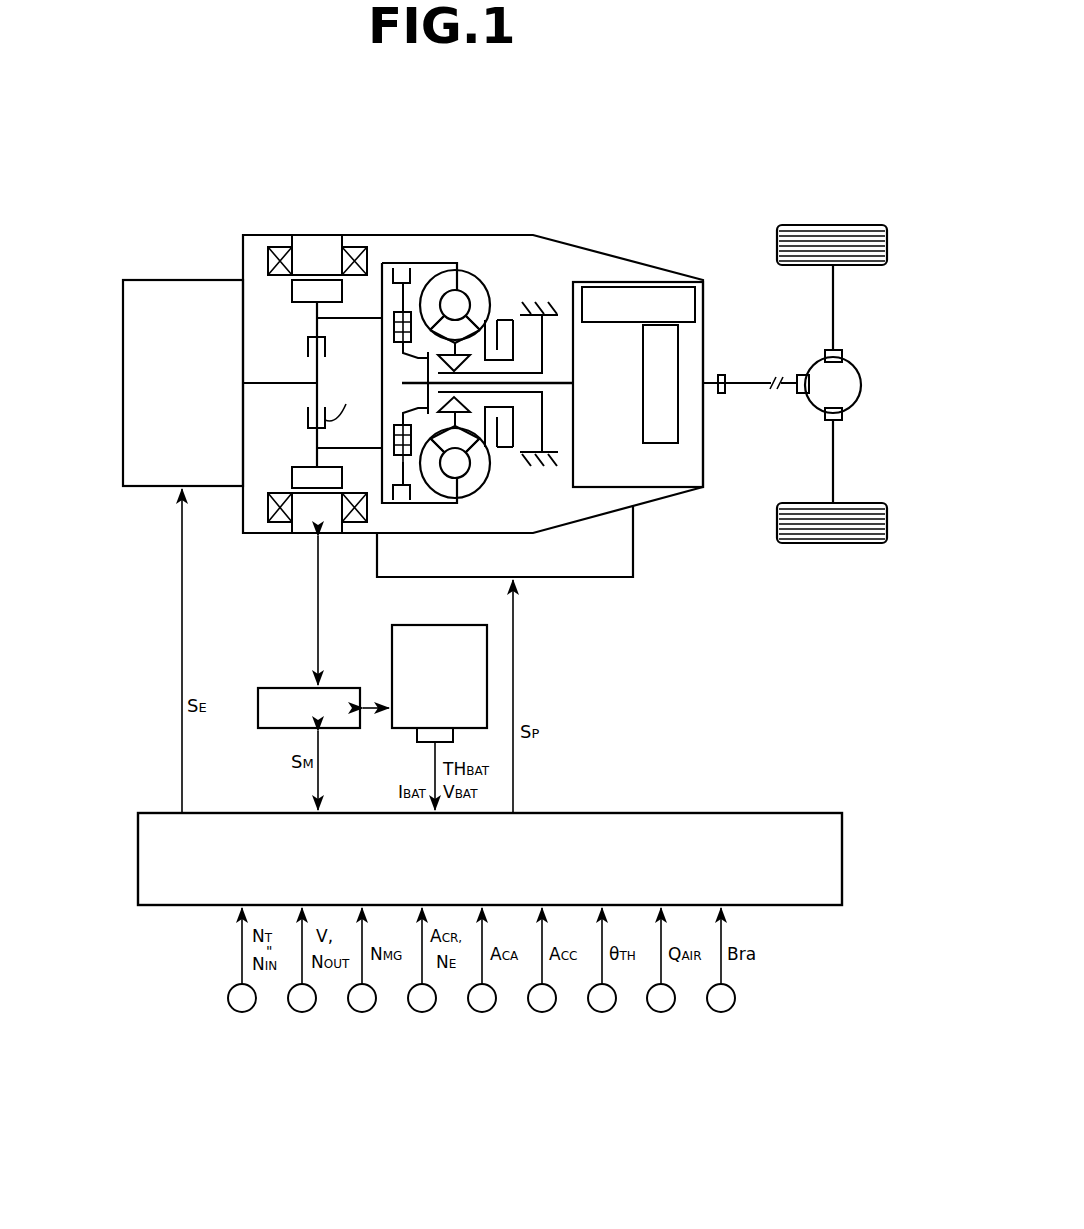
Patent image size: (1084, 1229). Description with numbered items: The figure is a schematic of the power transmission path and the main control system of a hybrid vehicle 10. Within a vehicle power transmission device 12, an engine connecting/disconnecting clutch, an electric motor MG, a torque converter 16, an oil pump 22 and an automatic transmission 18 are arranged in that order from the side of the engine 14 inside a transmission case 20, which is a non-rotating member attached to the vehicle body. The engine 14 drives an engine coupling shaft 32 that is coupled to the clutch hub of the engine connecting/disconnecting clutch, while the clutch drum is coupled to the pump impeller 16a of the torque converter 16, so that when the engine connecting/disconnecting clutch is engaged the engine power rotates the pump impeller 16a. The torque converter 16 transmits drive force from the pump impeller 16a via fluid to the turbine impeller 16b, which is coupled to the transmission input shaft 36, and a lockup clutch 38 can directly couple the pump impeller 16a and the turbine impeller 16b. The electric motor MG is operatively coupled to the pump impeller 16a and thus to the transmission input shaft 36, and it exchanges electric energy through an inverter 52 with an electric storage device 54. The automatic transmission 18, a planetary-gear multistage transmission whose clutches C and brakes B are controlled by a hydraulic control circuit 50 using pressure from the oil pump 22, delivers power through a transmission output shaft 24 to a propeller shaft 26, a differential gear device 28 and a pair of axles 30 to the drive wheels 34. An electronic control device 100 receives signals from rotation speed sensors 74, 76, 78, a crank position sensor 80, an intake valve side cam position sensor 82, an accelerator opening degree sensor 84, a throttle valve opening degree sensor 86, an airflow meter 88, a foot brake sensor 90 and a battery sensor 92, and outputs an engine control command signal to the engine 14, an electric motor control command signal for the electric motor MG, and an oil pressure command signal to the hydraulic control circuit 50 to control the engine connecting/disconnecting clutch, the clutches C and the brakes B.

The hybrid vehicle 10 is at (645, 146).
The vehicle power transmission device 12 is at (461, 191).
The engine 14 is at (148, 285).
The torque converter 16 is at (488, 269).
The pump impeller 16a is at (474, 477).
The turbine impeller 16b is at (431, 477).
The automatic transmission 18 is at (704, 332).
The transmission case 20 is at (483, 234).
The oil pump 22 is at (507, 438).
The transmission output shaft 24 is at (710, 378).
The propeller shaft 26 is at (750, 390).
The differential gear device 28 is at (846, 371).
The axles 30 is at (833, 307).
The engine coupling shaft 32 is at (279, 382).
The drive wheels 34 is at (781, 243).
The transmission input shaft 36 is at (559, 394).
The lockup clutch 38 is at (413, 275).
The hydraulic control circuit 50 is at (634, 543).
The inverter 52 is at (259, 720).
The electric storage device 54 is at (402, 630).
The rotation speed sensor 74 is at (242, 1012).
The rotation speed sensor 76 is at (302, 1012).
The rotation speed sensor 78 is at (362, 1012).
The crank position sensor 80 is at (422, 1012).
The intake valve side cam position sensor 82 is at (482, 1012).
The accelerator opening degree sensor 84 is at (542, 1012).
The throttle valve opening degree sensor 86 is at (602, 1012).
The airflow meter 88 is at (661, 1012).
The foot brake sensor 90 is at (721, 1012).
The battery sensor 92 is at (415, 735).
The electronic control device 100 is at (771, 825).